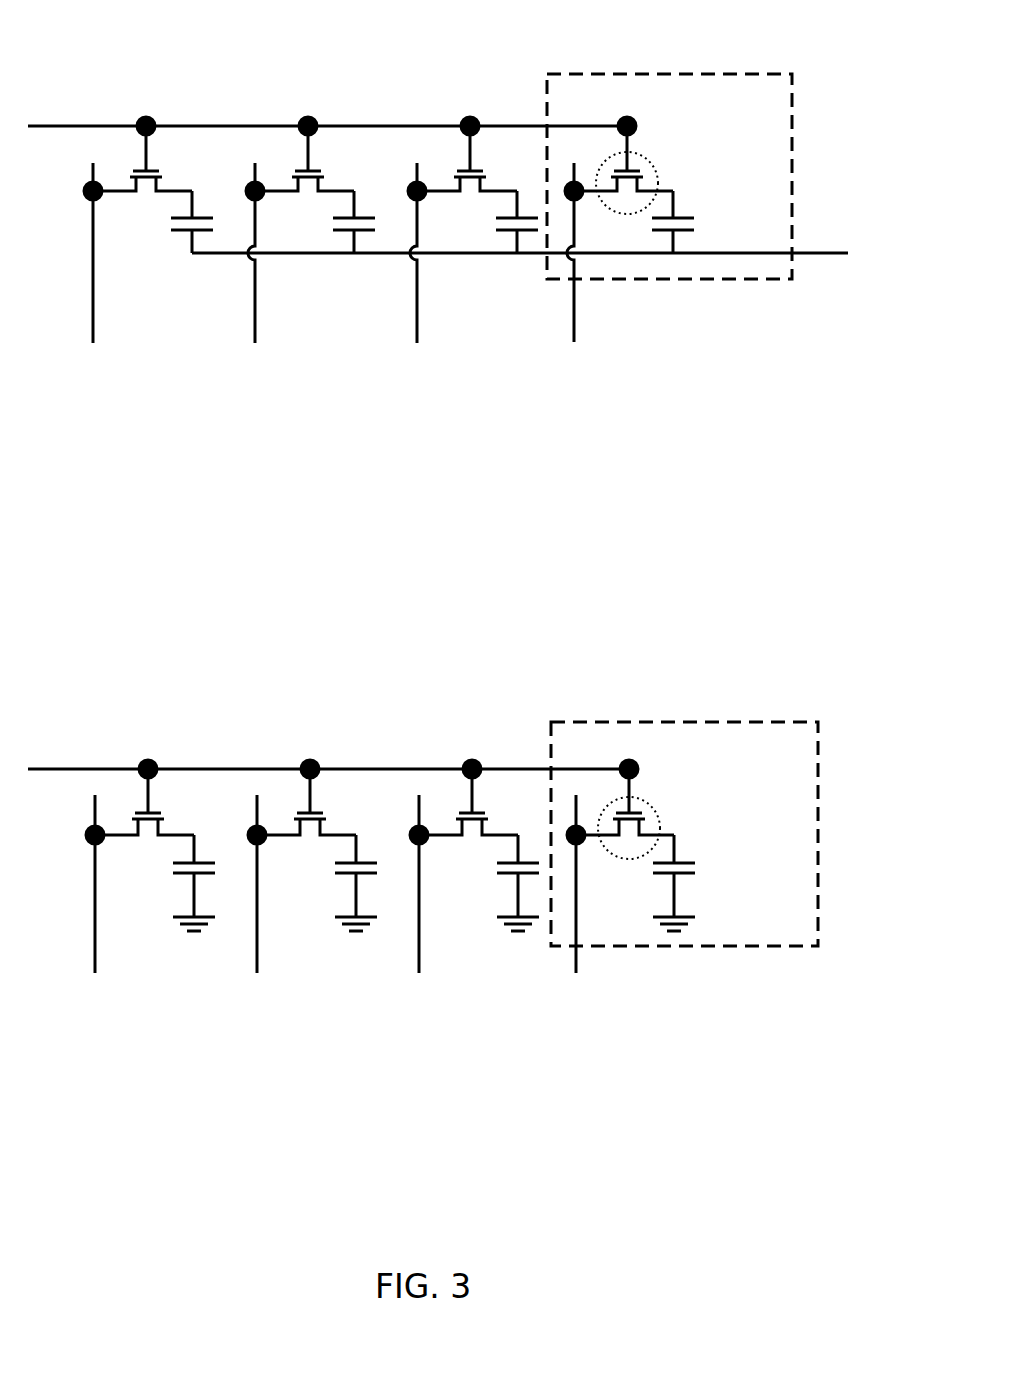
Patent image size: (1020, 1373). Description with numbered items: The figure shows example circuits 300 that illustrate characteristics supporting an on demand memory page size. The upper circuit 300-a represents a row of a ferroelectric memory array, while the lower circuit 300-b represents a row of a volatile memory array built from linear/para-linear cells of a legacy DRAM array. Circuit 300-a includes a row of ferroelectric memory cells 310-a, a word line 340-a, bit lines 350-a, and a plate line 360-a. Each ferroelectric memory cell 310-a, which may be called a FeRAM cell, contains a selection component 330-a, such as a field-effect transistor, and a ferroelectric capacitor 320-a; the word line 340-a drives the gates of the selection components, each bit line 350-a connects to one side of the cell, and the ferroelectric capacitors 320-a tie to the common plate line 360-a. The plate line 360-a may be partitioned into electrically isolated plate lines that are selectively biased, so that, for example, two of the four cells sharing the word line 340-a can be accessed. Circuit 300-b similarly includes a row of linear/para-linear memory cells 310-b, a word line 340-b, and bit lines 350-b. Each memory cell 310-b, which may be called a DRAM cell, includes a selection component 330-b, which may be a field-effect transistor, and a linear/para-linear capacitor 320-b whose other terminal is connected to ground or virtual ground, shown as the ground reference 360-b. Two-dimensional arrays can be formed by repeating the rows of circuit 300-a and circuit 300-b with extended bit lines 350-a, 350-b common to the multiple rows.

The circuits 300 is at (472, 651).
The circuit 300-a is at (472, 237).
The circuit 300-b is at (468, 903).
The ferroelectric memory cell 310-a is at (634, 194).
The linear/para-linear memory cell 310-b is at (647, 836).
The ferroelectric capacitor 320-a is at (698, 223).
The linear/para-linear capacitor 320-b is at (698, 865).
The selection component 330-a is at (648, 157).
The selection component 330-b is at (655, 807).
The word line 340-a is at (57, 125).
The word line 340-b is at (56, 770).
The bit lines 350-a is at (575, 333).
The bit lines 350-b is at (575, 965).
The plate line 360-a is at (815, 253).
The ground reference 360-b is at (698, 925).